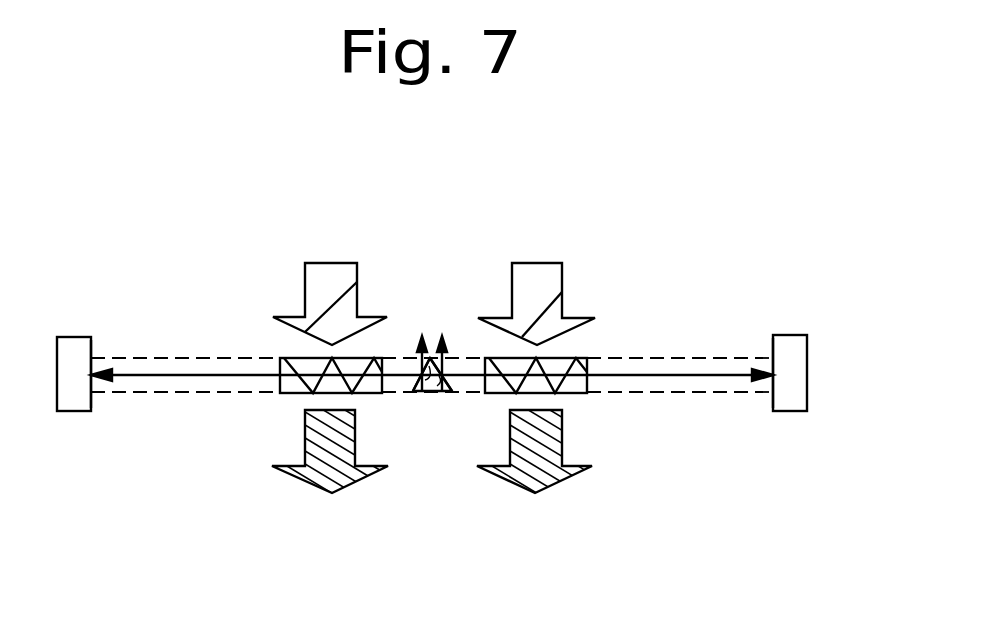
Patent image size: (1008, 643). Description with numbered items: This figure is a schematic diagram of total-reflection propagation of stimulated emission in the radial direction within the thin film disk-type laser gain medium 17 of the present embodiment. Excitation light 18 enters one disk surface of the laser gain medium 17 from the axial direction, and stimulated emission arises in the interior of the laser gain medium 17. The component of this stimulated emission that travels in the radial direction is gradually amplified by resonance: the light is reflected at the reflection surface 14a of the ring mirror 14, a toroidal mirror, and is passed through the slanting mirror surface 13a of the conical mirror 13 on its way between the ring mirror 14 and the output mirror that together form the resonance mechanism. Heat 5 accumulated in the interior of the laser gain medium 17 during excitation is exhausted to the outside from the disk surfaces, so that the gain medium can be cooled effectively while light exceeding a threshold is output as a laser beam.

The heat 5 is at (322, 480).
The conical mirror 13 is at (428, 395).
The slanting mirror surface 13a is at (418, 347).
The ring mirror 14 is at (78, 344).
The reflection surface 14a is at (92, 387).
The thin film disk-type laser gain medium 17 is at (580, 363).
The excitation light 18 is at (306, 291).